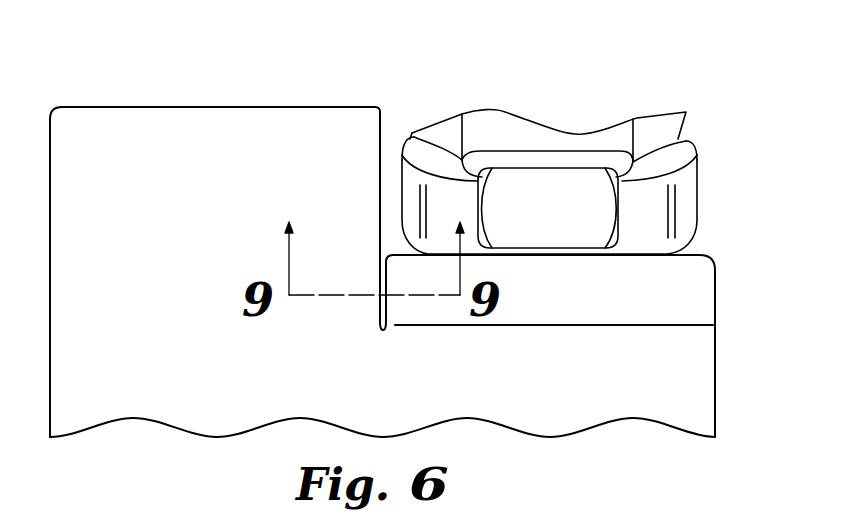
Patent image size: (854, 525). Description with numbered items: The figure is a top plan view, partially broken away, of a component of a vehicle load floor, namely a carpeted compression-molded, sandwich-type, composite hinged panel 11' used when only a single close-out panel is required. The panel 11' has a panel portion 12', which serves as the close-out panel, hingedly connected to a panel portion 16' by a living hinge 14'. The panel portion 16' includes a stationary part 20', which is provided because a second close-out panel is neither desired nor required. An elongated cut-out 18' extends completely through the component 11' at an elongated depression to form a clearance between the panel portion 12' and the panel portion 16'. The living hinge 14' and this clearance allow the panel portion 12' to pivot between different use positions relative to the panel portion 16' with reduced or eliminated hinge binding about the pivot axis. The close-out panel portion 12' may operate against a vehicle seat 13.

The stationary part 20' is at (216, 235).
The elongated cut-out 18' is at (386, 333).
The panel portion 12' is at (574, 241).
The living hinge 14' is at (574, 285).
The composite hinged panel 11' is at (756, 381).
The panel portion 16' is at (382, 416).
The vehicle seat 13 is at (559, 224).